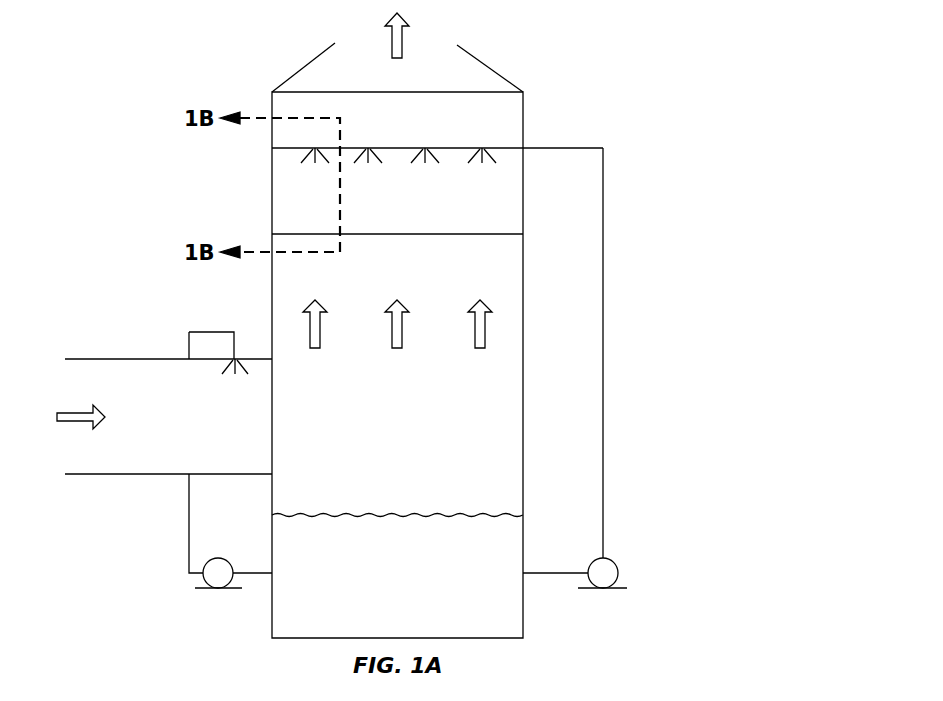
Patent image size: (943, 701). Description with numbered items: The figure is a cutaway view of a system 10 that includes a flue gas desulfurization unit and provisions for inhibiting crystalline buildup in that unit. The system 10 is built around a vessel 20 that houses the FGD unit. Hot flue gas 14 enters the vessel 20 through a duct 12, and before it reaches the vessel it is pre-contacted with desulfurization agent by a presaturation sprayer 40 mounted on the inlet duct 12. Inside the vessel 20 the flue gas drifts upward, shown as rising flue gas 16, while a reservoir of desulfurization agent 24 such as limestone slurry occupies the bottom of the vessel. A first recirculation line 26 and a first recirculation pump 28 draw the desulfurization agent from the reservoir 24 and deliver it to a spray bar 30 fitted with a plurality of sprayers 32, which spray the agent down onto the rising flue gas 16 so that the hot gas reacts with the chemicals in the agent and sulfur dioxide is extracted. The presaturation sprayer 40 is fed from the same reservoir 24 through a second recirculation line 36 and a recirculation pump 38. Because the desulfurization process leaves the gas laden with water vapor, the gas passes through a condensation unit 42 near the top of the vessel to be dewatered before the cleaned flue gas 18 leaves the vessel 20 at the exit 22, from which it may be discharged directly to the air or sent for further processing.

The system 10 is at (267, 38).
The duct 12 is at (128, 359).
The flue gas 14 is at (77, 423).
The rising flue gas 16 is at (310, 330).
The cleaned flue gas 18 is at (402, 38).
The vessel 20 is at (272, 163).
The vessel exit 22 is at (442, 62).
The reservoir of desulfurization agent 24 is at (338, 613).
The first recirculation line 26 is at (603, 405).
The first recirculation pump 28 is at (612, 575).
The spray bar 30 is at (512, 147).
The sprayers 32 is at (315, 148).
The second recirculation line 36 is at (189, 527).
The feed pump 38 is at (221, 578).
The presaturation sprayer 40 is at (248, 358).
The condensation unit 42 is at (470, 92).